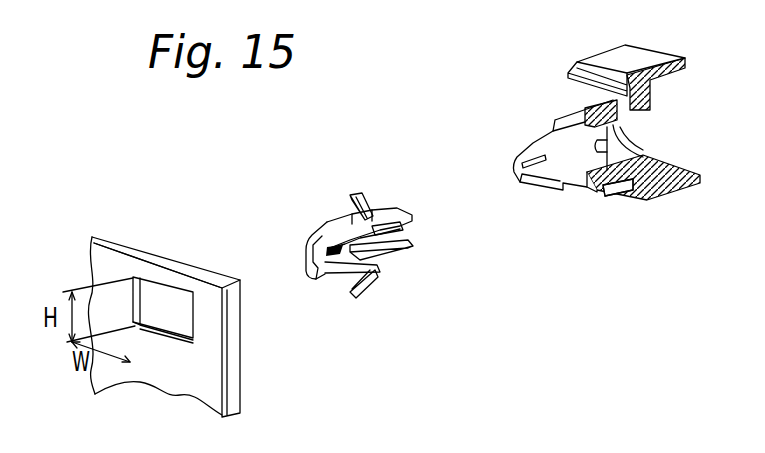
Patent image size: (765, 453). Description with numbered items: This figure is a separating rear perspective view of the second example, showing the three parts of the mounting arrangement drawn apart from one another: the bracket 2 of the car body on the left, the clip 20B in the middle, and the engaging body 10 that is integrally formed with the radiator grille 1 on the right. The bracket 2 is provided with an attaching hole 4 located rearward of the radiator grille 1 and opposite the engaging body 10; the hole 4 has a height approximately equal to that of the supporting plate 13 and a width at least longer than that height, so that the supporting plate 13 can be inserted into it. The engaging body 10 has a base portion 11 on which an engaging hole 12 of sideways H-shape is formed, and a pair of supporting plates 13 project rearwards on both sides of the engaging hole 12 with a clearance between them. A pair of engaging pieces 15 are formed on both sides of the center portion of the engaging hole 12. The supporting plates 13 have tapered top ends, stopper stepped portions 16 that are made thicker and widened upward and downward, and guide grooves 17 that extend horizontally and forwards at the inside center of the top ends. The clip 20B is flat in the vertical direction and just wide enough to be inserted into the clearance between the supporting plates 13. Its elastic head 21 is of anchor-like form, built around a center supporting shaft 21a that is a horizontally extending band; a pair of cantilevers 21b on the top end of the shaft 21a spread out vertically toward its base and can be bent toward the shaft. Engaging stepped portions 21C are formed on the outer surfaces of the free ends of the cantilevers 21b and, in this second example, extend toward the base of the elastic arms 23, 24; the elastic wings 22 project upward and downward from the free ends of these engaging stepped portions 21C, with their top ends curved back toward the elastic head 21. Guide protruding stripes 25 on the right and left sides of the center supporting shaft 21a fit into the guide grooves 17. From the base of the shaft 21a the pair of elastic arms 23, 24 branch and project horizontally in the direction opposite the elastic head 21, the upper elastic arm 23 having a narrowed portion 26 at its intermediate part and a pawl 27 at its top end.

The radiator grille 1 is at (637, 53).
The bracket 2 is at (178, 260).
The attaching hole 4 is at (177, 318).
The engaging body 10 is at (586, 136).
The base portion 11 is at (598, 105).
The engaging hole 12 is at (620, 170).
The supporting plate 13 is at (533, 143).
The engaging piece 15 is at (603, 147).
The stopper stepped portion 16 is at (552, 127).
The guide groove 17 is at (523, 157).
The clip 20B is at (379, 249).
The elastic head 21 is at (342, 249).
The center supporting shaft 21a is at (348, 257).
The cantilever 21b is at (347, 257).
The engaging stepped portion 21C is at (355, 218).
The elastic wing 22 is at (372, 202).
The upper elastic arm 23 is at (430, 201).
The lower elastic arm 24 is at (400, 250).
The guide protruding stripe 25 is at (330, 247).
The narrowed portion 26 is at (385, 230).
The pawl 27 is at (398, 215).